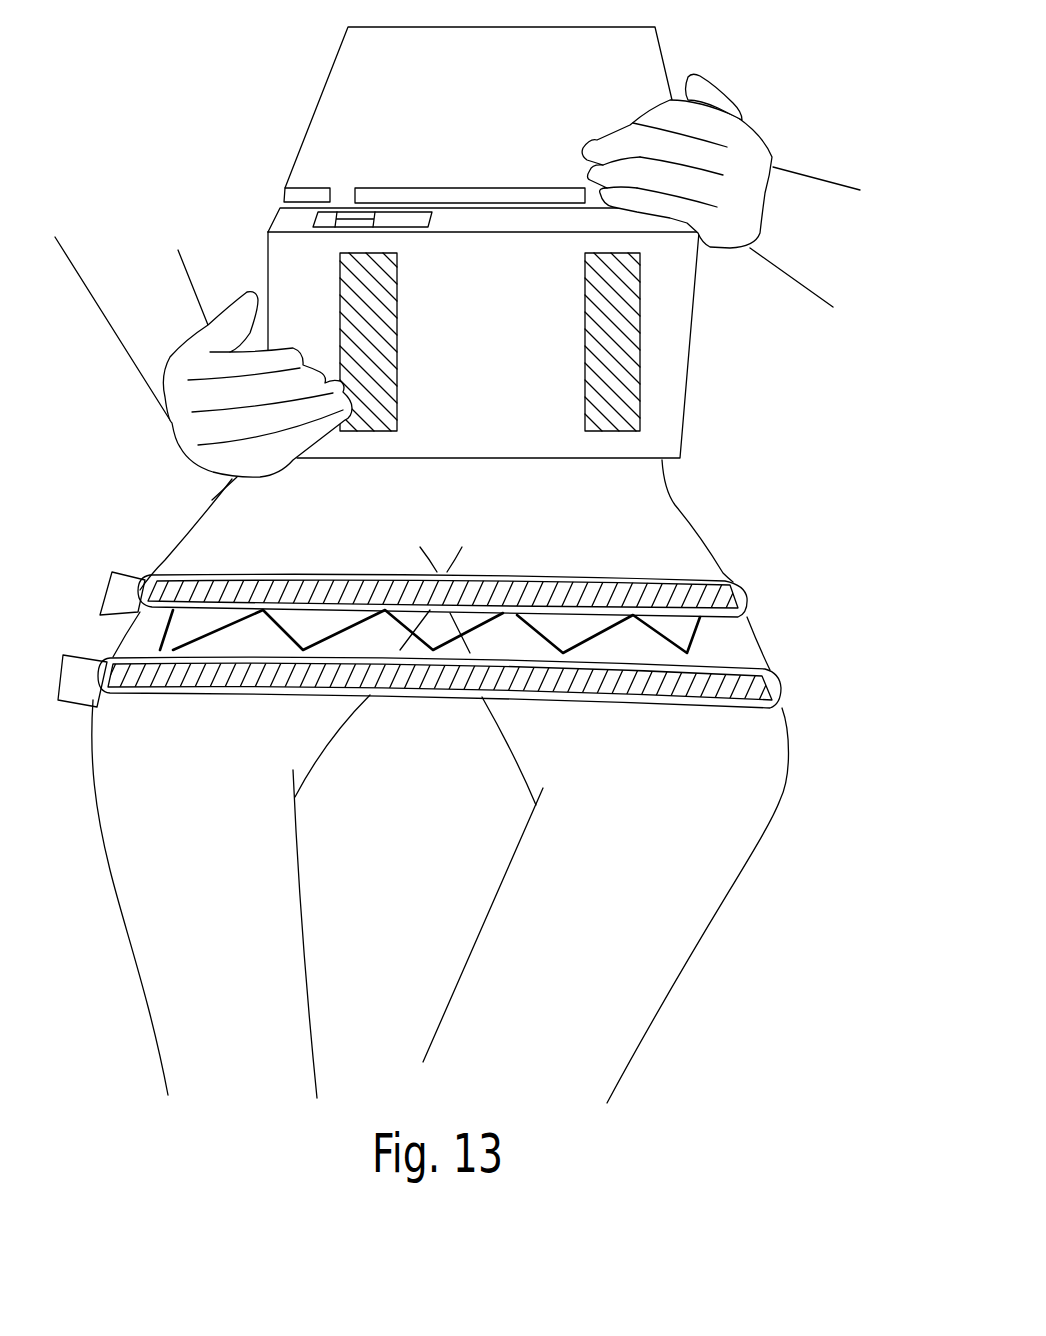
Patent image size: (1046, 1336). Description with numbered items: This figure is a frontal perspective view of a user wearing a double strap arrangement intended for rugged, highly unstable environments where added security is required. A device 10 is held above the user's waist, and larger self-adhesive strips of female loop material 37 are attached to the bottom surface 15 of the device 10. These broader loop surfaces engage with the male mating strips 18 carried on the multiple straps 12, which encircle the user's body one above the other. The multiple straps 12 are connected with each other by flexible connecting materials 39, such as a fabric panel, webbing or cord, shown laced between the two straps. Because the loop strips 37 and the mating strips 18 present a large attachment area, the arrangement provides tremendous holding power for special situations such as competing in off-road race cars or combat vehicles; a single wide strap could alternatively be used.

The device 10 is at (657, 28).
The bottom surface 15 is at (687, 387).
The self-adhesive strips of female loop material 37 is at (600, 340).
The multiple straps 12 is at (745, 603).
The male mating strips 18 is at (237, 583).
The flexible connecting materials 39 is at (280, 628).